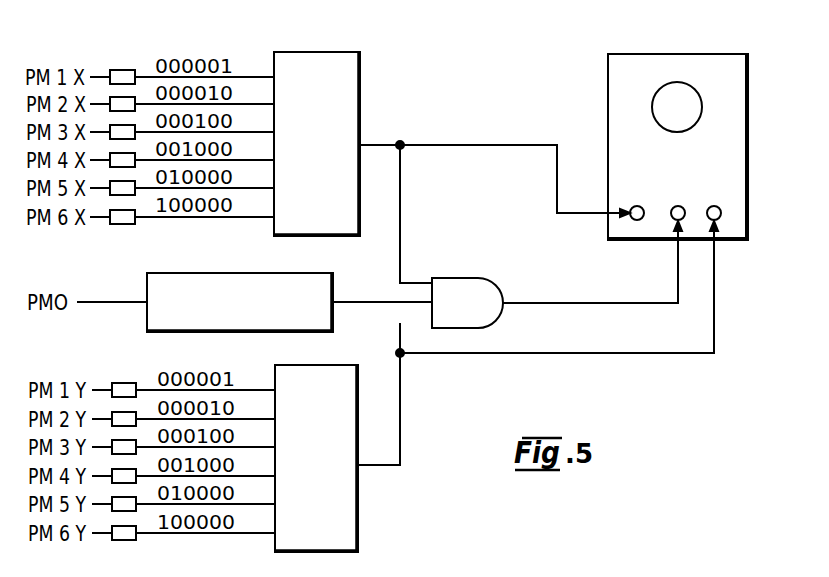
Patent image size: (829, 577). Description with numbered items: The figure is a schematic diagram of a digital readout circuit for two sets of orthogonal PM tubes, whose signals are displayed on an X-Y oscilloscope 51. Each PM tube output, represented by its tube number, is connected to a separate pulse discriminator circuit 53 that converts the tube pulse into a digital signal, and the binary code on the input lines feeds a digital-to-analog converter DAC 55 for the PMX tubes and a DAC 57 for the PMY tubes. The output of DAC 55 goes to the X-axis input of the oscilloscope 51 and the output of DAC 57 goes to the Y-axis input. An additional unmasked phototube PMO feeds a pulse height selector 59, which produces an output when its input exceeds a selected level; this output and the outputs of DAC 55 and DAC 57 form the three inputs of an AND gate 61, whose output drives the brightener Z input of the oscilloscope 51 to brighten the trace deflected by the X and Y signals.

The X-Y oscilloscope 51 is at (608, 88).
The pulse discriminator circuit 53 is at (137, 96).
The digital-to-analog converter DAC (PMX tubes) 55 is at (335, 133).
The DAC (PMY tubes) 57 is at (322, 443).
The pulse height selector 59 is at (260, 295).
The AND gate 61 is at (483, 293).